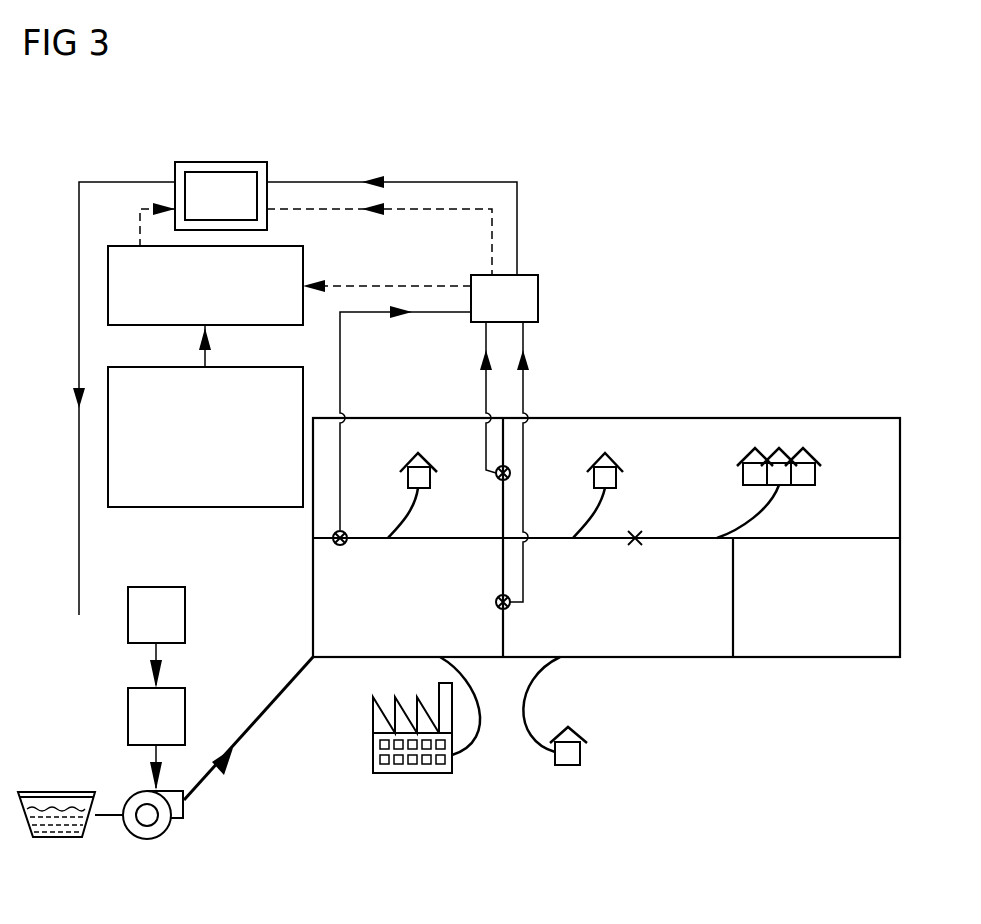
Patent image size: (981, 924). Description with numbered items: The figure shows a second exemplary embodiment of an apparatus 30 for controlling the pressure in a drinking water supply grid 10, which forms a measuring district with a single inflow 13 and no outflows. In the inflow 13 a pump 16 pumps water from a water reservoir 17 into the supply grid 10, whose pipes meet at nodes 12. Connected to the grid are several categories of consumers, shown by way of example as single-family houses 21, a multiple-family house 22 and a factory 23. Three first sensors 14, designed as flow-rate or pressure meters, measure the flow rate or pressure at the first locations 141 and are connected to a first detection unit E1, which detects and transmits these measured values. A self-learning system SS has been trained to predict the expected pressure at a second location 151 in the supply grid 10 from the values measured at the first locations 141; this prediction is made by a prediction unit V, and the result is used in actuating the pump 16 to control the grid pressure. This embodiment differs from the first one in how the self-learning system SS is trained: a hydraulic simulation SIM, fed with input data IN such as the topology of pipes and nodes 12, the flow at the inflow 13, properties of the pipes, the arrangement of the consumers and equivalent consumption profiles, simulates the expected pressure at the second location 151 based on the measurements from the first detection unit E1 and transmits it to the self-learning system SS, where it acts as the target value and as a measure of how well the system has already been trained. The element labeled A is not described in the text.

The apparatus 30 is at (66, 212).
The self-learning system SS is at (218, 160).
The hydraulic simulation SIM is at (303, 268).
The input data IN is at (205, 507).
The first detection unit E1 is at (538, 297).
The first sensors 14 is at (500, 481).
The first locations 141 is at (496, 470).
The supply grid 10 is at (877, 390).
The nodes 12 is at (900, 538).
The single-family houses 21 is at (407, 478).
The multiple-family house 22 is at (816, 476).
The second location 151 is at (640, 546).
The factory 23 is at (412, 774).
The prediction unit V is at (185, 613).
The actuator A is at (127, 716).
The pump 16 is at (147, 840).
The water reservoir 17 is at (58, 838).
The inflow 13 is at (255, 720).